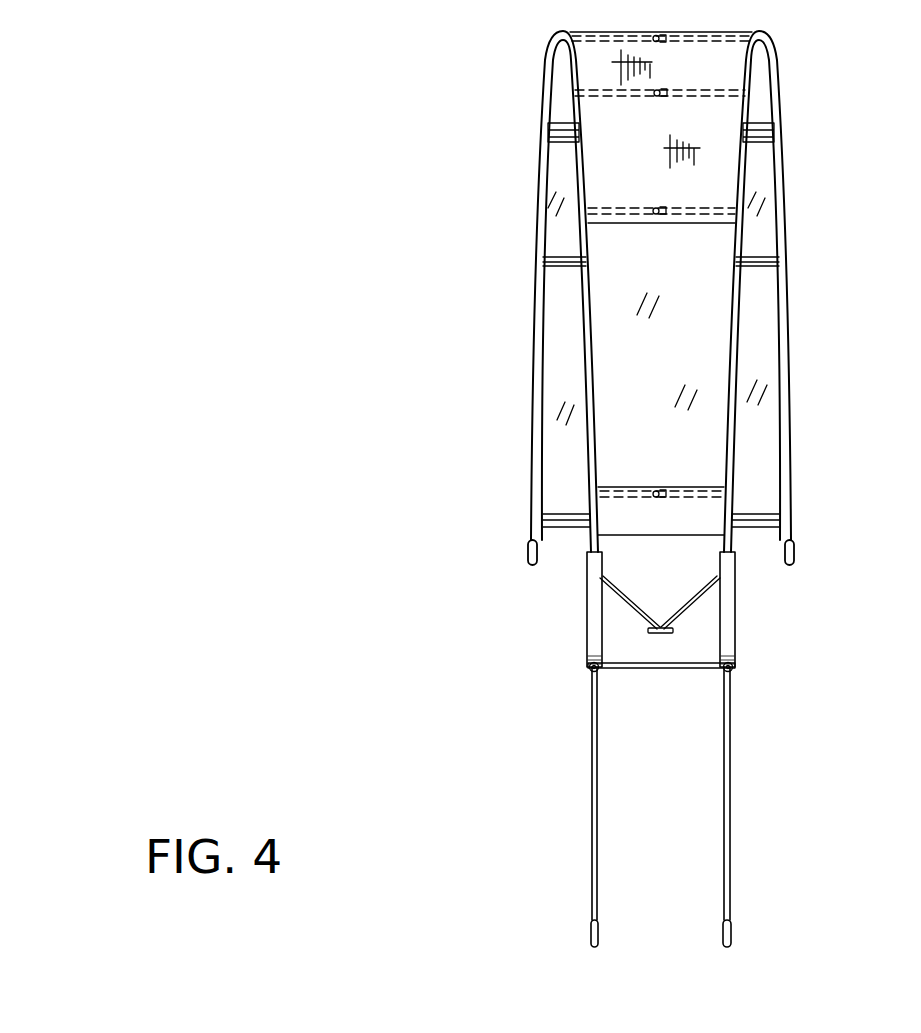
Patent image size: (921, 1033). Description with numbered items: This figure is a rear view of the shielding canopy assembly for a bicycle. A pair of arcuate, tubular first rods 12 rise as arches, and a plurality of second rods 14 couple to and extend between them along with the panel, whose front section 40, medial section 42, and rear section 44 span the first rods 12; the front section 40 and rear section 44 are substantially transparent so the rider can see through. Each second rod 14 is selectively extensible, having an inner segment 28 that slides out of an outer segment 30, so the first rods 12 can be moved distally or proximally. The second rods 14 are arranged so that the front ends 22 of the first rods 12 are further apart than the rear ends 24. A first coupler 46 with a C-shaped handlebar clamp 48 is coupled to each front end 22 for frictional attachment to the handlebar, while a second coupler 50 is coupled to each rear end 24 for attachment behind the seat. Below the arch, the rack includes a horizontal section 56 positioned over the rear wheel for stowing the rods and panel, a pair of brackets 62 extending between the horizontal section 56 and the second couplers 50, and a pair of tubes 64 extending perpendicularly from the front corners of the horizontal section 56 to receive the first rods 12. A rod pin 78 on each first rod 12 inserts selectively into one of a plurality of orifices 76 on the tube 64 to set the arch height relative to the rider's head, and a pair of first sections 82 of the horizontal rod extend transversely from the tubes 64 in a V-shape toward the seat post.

The first rod 12 is at (547, 190).
The second rod 14 is at (683, 210).
The front end 22 is at (533, 537).
The rear end 24 is at (732, 637).
The inner segment 28 is at (693, 92).
The outer segment 30 is at (610, 91).
The front section 40 is at (556, 366).
The medial section 42 is at (623, 120).
The rear section 44 is at (623, 395).
The first coupler 46 is at (535, 547).
The handlebar clamp 48 is at (528, 553).
The second coupler 50 is at (723, 938).
The horizontal section 56 is at (668, 670).
The bracket 62 is at (726, 785).
The tube 64 is at (600, 566).
The orifice 76 is at (623, 602).
The rod pin 78 is at (733, 618).
The first section 82 is at (670, 610).